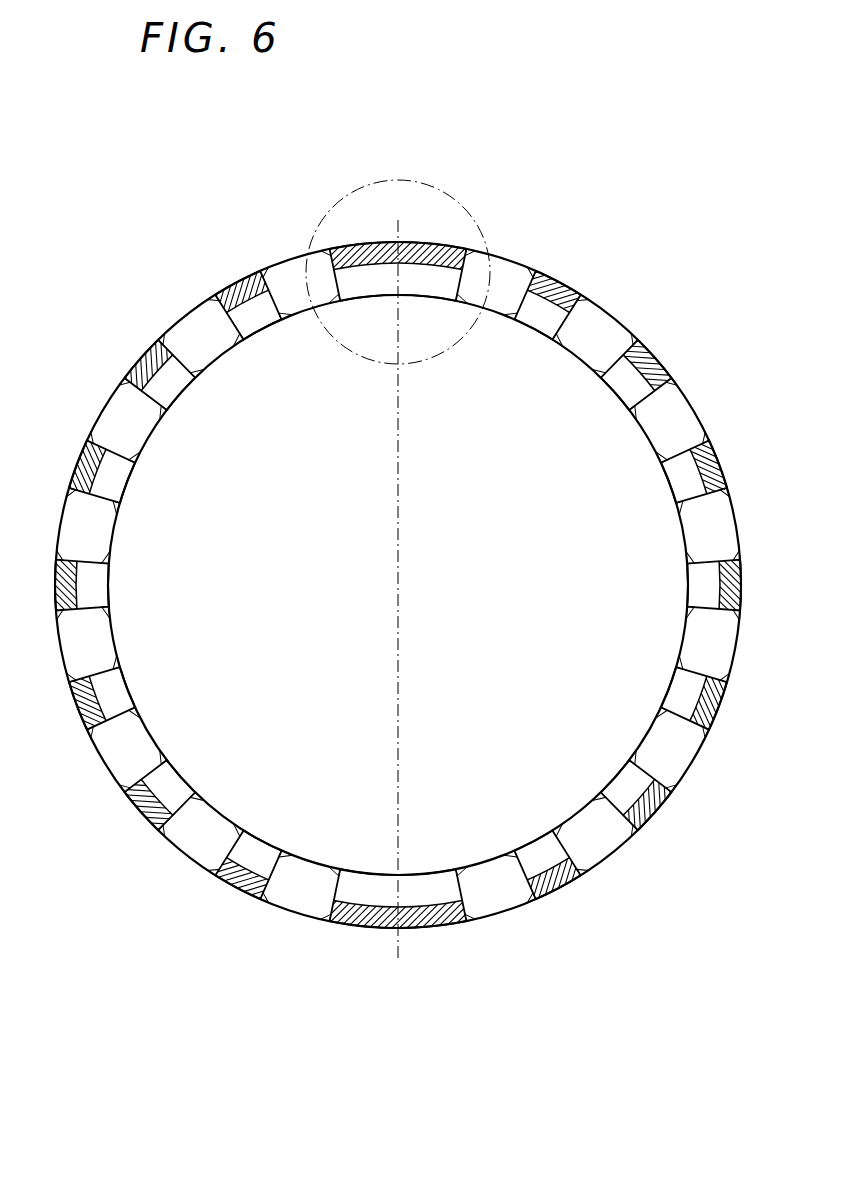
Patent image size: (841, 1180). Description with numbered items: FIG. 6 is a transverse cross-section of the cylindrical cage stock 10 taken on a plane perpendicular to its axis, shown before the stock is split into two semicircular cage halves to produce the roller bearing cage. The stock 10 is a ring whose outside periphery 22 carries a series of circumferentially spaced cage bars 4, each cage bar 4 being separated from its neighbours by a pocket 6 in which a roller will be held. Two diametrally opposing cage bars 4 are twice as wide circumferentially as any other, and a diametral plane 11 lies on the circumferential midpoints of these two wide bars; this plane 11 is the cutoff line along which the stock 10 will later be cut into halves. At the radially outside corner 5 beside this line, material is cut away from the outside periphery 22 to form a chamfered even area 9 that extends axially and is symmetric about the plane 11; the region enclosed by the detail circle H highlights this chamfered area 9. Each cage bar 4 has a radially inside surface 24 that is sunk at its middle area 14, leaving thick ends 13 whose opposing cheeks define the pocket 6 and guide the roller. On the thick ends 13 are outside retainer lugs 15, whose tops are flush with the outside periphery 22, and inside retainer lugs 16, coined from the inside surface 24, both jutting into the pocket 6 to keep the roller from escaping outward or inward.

The cage bar 4 is at (452, 254).
The radially outside corner 5 is at (380, 243).
The pocket 6 is at (143, 447).
The chamfered even area 9 is at (418, 245).
The cylindrical cage stock 10 is at (613, 305).
The diametral plane 11 is at (400, 282).
The thick end 13 is at (625, 775).
The middle area 14 is at (238, 887).
The outside retainer lug 15 is at (713, 433).
The inside retainer lug 16 is at (667, 460).
The outside periphery 22 is at (80, 460).
The radially inside surface 24 is at (217, 363).
The detail circle H is at (358, 192).